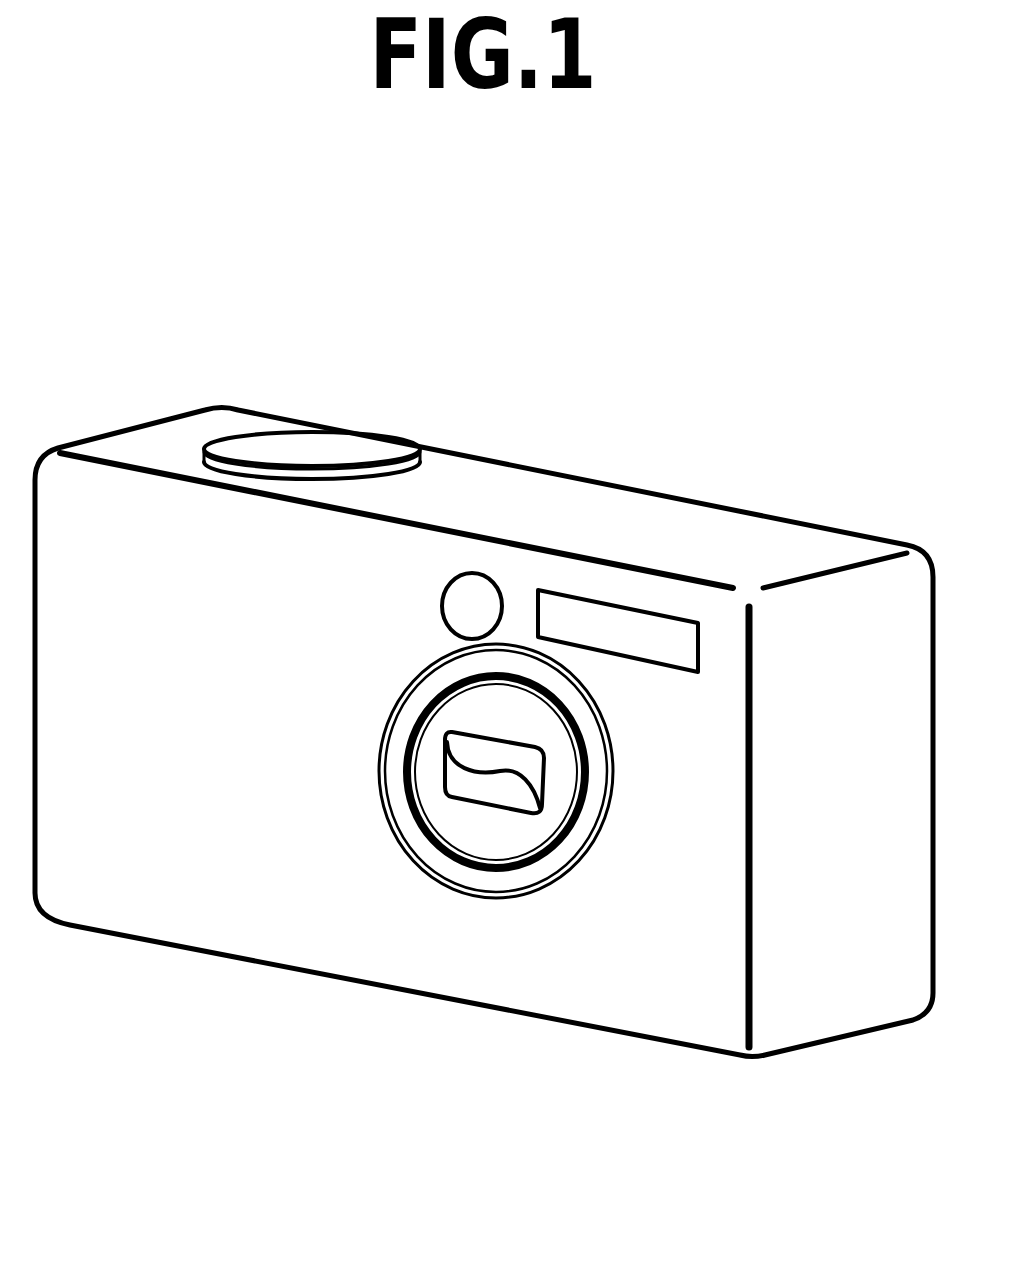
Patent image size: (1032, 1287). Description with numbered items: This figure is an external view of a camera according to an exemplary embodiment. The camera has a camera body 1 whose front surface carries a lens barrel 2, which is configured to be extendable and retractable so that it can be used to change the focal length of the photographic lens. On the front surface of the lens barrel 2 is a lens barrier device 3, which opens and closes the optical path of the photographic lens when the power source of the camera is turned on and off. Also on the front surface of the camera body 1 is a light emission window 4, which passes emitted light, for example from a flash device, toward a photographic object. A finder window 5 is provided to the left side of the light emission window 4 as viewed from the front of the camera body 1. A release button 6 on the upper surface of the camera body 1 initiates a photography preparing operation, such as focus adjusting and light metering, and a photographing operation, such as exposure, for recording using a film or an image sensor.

The camera body 1 is at (683, 970).
The lens barrel 2 is at (525, 847).
The lens barrier device 3 is at (470, 792).
The light emission window 4 is at (640, 627).
The finder window 5 is at (480, 587).
The release button 6 is at (348, 450).